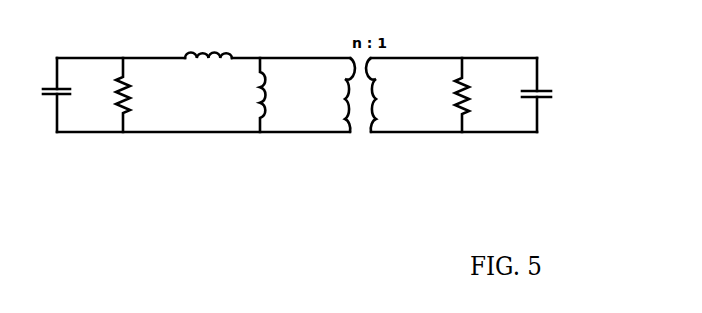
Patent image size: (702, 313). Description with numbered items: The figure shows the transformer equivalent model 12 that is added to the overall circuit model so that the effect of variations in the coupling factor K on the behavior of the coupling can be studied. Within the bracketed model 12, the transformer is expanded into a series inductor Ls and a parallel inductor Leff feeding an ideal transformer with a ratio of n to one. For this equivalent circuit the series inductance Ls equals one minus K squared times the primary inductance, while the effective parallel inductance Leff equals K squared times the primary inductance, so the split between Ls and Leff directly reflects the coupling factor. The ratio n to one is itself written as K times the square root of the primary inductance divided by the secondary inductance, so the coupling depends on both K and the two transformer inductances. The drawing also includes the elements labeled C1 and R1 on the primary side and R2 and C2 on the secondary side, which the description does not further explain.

The transformer equivalent model 12 is at (291, 116).
The capacitor C1 is at (68, 95).
The resistor R1 is at (136, 95).
The series inductor Ls is at (208, 45).
The parallel inductor Leff is at (278, 95).
The resistor R2 is at (475, 95).
The capacitor C2 is at (547, 95).